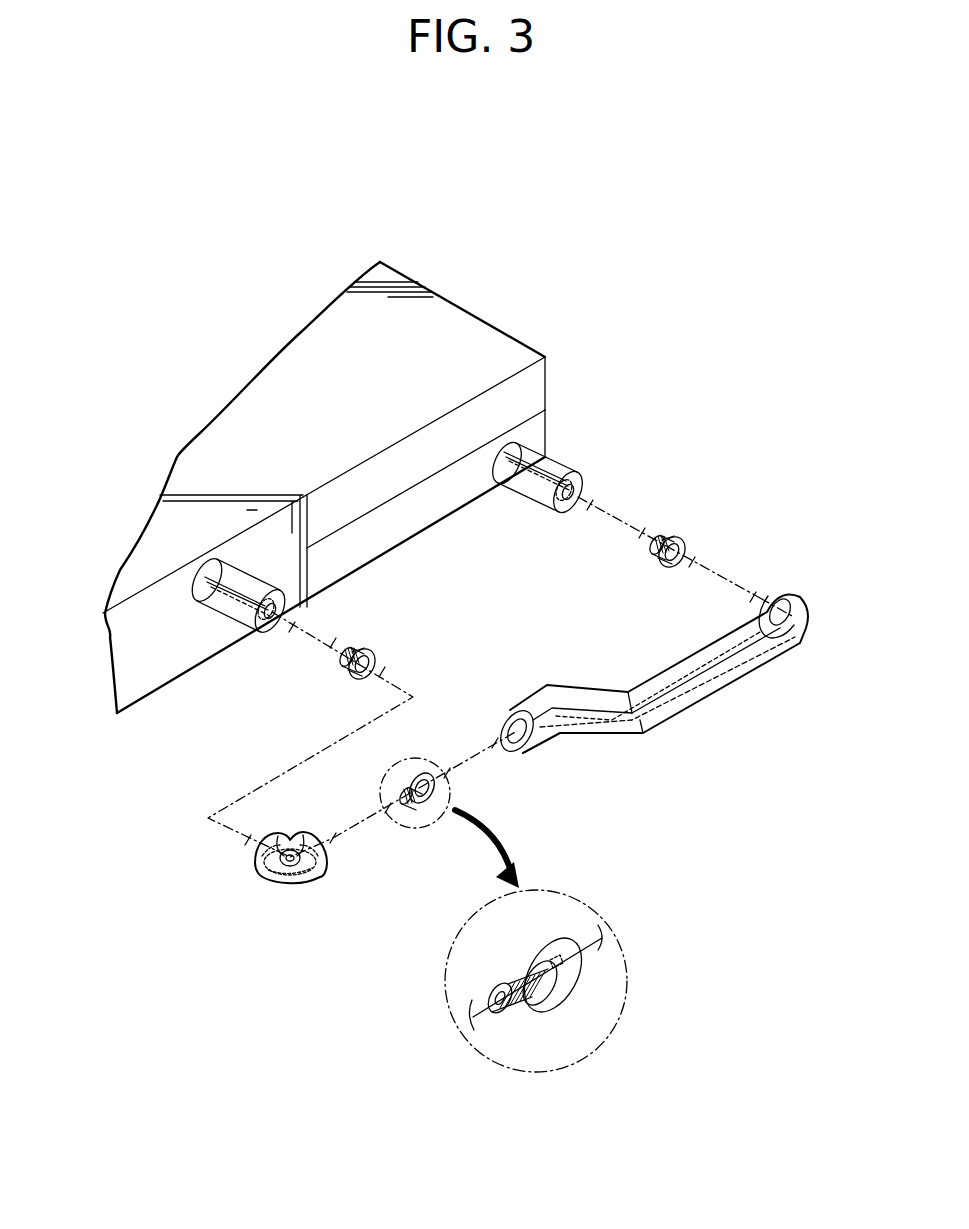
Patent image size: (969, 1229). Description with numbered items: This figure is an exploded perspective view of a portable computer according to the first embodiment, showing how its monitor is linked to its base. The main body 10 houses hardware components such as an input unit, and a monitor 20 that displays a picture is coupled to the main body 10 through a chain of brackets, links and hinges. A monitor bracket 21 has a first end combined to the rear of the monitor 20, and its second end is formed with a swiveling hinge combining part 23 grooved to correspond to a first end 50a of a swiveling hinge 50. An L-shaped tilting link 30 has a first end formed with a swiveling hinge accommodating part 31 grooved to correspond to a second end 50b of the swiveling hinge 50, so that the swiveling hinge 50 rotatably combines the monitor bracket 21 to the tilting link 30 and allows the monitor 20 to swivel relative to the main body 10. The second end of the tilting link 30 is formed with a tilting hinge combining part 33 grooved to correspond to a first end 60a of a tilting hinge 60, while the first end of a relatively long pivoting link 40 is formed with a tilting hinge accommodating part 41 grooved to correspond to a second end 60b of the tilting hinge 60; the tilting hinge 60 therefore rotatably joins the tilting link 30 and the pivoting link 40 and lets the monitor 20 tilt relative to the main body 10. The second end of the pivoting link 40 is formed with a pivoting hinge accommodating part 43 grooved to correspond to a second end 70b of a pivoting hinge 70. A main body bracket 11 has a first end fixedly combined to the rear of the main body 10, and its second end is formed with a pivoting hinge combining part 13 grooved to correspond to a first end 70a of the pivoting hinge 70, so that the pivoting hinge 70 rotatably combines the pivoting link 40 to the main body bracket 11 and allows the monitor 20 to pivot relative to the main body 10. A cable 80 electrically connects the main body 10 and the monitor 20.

The main body 10 is at (542, 432).
The main body bracket 11 is at (557, 463).
The pivoting hinge combining part 13 is at (583, 473).
The monitor 20 is at (545, 383).
The monitor bracket 21 is at (237, 625).
The swiveling hinge combining part 23 is at (270, 632).
The tilting link 30 is at (293, 890).
The swiveling hinge accommodating part 31 is at (260, 883).
The tilting hinge combining part 33 is at (320, 875).
The pivoting link 40 is at (670, 674).
The tilting hinge accommodating part 41 is at (527, 752).
The pivoting hinge accommodating part 43 is at (790, 585).
The swiveling hinge 50 is at (392, 618).
The first end of swiveling hinge 50a is at (353, 647).
The second end of swiveling hinge 50b is at (370, 652).
The tilting hinge 60 is at (503, 958).
The first end of tilting hinge 60a is at (516, 1012).
The second end of tilting hinge 60b is at (560, 1018).
The pivoting hinge 70 is at (703, 504).
The first end of pivoting hinge 70a is at (662, 530).
The second end of pivoting hinge 70b is at (688, 541).
The cable 80 is at (757, 595).